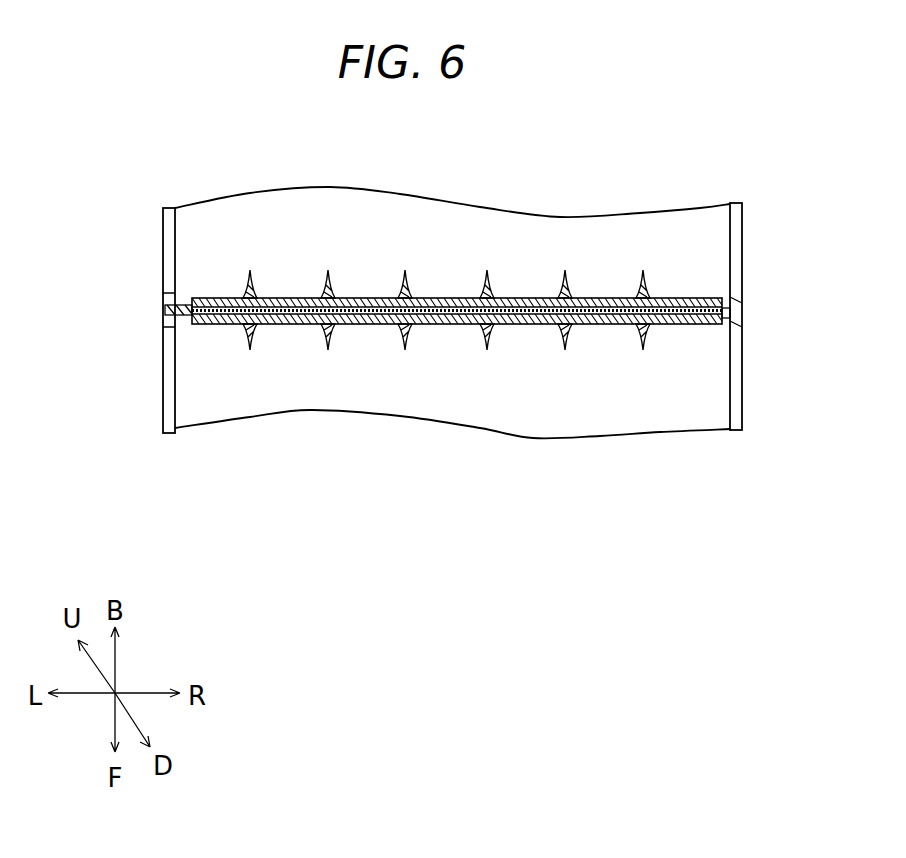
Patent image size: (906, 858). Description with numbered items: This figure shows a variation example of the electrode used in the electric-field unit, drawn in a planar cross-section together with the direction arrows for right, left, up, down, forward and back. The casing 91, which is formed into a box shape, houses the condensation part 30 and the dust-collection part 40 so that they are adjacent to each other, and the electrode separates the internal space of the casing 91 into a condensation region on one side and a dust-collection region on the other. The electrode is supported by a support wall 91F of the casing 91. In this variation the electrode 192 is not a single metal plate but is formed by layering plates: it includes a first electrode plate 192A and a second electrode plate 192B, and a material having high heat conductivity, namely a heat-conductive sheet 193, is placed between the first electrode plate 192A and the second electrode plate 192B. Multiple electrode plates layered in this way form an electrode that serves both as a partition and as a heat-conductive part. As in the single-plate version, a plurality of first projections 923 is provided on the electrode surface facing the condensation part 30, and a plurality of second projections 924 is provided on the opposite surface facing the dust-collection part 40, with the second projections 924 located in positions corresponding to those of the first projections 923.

The condensation part 30 is at (264, 453).
The dust-collection part 40 is at (251, 167).
The casing 91 is at (738, 203).
The support wall 91F is at (192, 300).
The electrode 192 is at (457, 315).
The first electrode plate 192A is at (362, 324).
The second electrode plate 192B is at (353, 297).
The heat-conductive sheet 193 is at (283, 297).
The first projections 923 is at (643, 343).
The second projections 924 is at (643, 272).